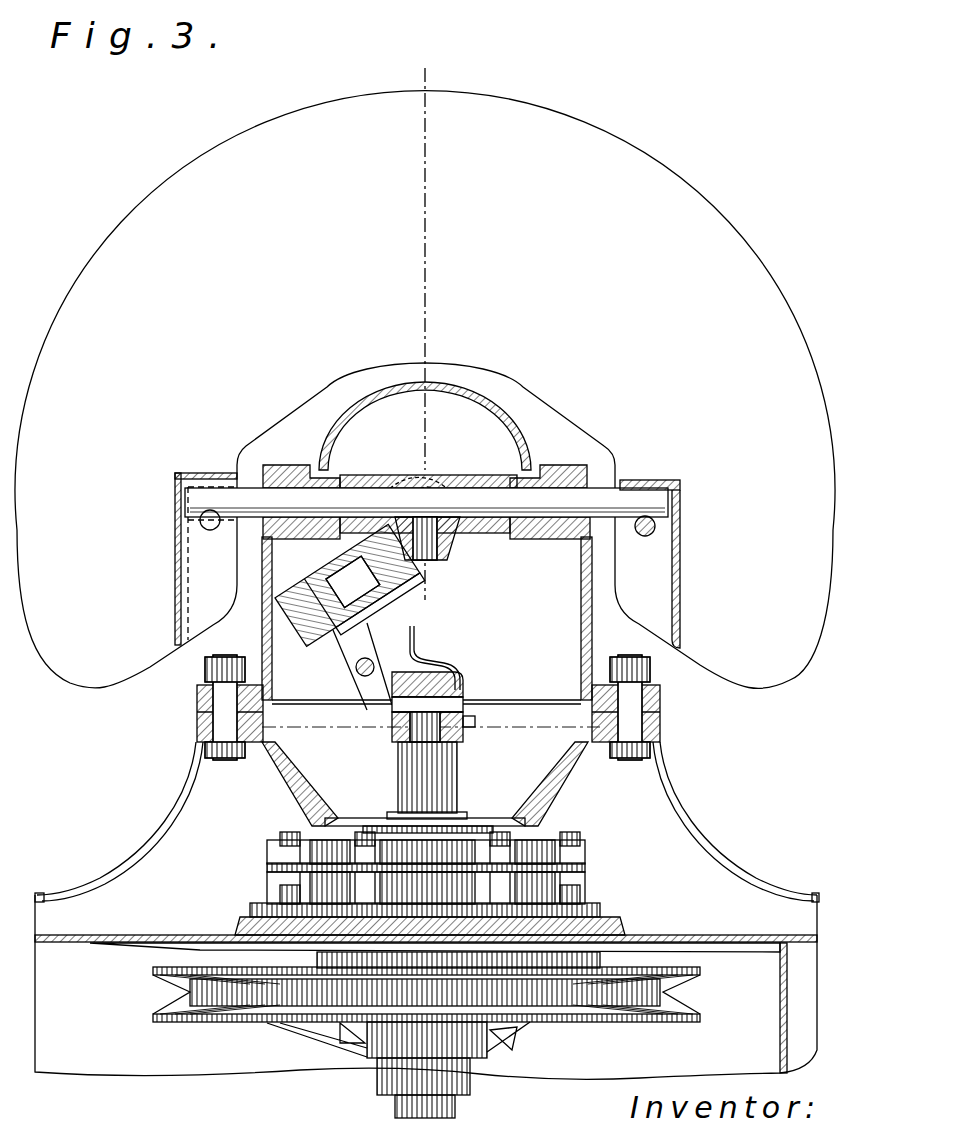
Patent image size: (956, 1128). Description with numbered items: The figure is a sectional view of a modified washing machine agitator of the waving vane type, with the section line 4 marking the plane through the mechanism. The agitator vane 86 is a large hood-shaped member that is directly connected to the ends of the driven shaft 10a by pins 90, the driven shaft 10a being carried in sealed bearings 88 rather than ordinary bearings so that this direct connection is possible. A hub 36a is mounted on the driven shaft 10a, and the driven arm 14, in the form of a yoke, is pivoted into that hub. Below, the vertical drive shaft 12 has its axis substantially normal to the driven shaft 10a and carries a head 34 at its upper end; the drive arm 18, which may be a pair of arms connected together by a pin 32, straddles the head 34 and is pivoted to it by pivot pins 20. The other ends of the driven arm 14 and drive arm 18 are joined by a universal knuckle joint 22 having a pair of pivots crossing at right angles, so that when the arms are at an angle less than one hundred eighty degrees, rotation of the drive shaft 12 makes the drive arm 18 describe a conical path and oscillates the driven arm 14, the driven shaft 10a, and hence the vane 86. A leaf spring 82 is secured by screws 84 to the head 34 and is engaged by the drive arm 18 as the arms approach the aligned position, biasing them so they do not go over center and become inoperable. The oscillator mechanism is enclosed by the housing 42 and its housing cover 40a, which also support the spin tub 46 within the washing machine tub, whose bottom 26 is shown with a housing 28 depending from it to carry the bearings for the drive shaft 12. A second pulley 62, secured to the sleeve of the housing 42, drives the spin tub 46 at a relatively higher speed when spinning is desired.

The section line 4- 4 is at (405, 70).
The driven shaft 10a is at (603, 496).
The drive shaft 12 is at (447, 783).
The driven arm 14 is at (397, 572).
The drive arm 18 is at (392, 727).
The pivot pins 20 is at (467, 675).
The universal knuckle joint 22 is at (373, 597).
The bottom of washing machine tub 26 is at (182, 933).
The housing 28 is at (777, 1013).
The pin 32 is at (356, 671).
The head 34 is at (393, 733).
The hub 36a is at (488, 455).
The housing cover 40a is at (582, 612).
The housing 42 is at (555, 785).
The spin tub 46 is at (683, 813).
The second pulley 62 is at (595, 1020).
The leaf spring 82 is at (412, 632).
The screws 84 is at (476, 723).
The vane 86 is at (724, 232).
The sealed bearings 88 is at (333, 470).
The pins 90 is at (210, 530).